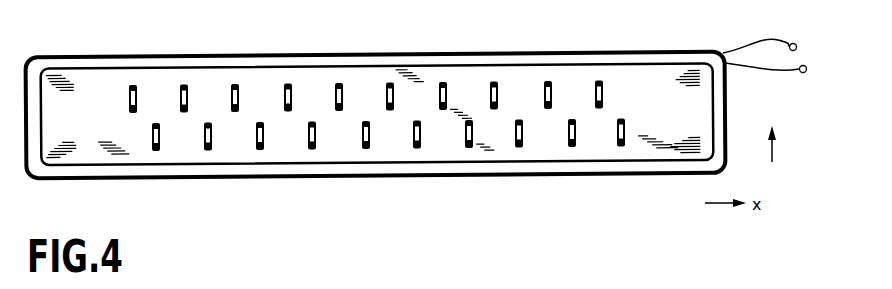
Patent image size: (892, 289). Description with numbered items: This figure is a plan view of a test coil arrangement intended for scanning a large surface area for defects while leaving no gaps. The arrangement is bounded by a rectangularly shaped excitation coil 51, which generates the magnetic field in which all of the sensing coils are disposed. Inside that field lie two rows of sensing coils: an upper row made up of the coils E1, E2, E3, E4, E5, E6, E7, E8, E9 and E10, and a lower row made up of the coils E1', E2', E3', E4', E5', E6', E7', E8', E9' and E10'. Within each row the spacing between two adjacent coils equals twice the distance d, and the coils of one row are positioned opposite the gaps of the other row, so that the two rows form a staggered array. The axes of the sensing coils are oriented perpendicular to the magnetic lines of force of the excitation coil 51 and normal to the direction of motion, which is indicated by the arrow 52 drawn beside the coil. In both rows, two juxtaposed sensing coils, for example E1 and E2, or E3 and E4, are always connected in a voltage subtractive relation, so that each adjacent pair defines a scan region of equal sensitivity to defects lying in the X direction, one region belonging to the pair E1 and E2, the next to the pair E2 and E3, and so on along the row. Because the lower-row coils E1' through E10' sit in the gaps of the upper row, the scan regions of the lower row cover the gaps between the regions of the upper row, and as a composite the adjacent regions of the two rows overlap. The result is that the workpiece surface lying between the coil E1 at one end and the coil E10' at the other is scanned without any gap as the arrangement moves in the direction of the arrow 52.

The excitation coil 51 is at (58, 175).
The arrow 52 is at (777, 153).
The sensing coil E1 is at (115, 65).
The sensing coil E2 is at (164, 65).
The sensing coil E3 is at (218, 65).
The sensing coil E4 is at (270, 65).
The sensing coil E5 is at (323, 64).
The sensing coil E6 is at (379, 64).
The sensing coil E7 is at (438, 64).
The sensing coil E8 is at (496, 64).
The sensing coil E9 is at (550, 63).
The sensing coil E10 is at (608, 63).
The sensing coil E1' is at (140, 170).
The sensing coil E2' is at (199, 171).
The sensing coil E3' is at (252, 170).
The sensing coil E4' is at (303, 170).
The sensing coil E5' is at (354, 169).
The sensing coil E6' is at (404, 170).
The sensing coil E7' is at (458, 169).
The sensing coil E8' is at (508, 169).
The sensing coil E9' is at (563, 168).
The sensing coil E10' is at (611, 169).